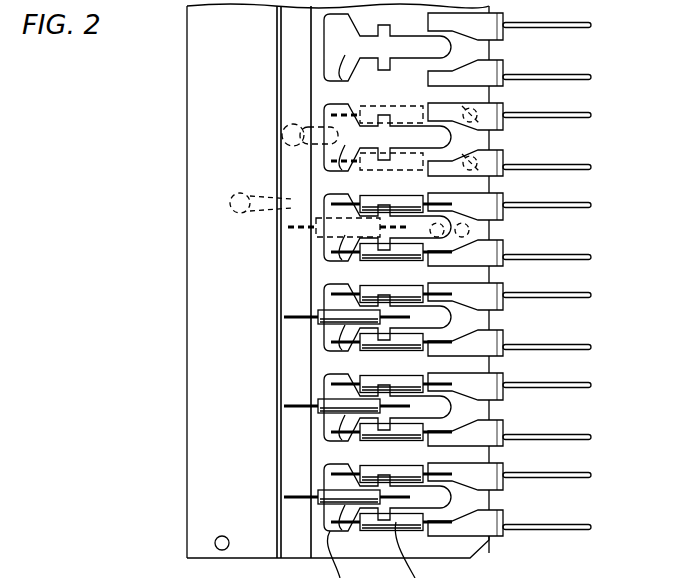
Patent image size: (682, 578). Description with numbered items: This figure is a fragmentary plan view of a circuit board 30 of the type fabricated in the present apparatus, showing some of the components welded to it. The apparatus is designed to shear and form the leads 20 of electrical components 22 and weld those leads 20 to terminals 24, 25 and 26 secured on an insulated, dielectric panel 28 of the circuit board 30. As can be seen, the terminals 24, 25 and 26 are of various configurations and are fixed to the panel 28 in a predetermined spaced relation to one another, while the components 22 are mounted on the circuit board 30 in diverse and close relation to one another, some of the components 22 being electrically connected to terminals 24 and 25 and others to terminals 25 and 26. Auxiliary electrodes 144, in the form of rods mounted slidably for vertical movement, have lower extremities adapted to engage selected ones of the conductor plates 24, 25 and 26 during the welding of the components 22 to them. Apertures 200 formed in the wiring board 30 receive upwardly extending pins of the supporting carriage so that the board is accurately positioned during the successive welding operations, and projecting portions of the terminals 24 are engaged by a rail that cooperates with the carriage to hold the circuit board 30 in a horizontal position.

The leads 20 is at (333, 497).
The electrical components 22 is at (420, 100).
The terminal 24 is at (497, 30).
The terminal 25 is at (340, 74).
The terminal 26 is at (300, 60).
The insulated panel 28 is at (200, 300).
The circuit board 30 is at (186, 380).
The auxiliary electrodes 144 is at (283, 128).
The apertures 200 is at (229, 538).